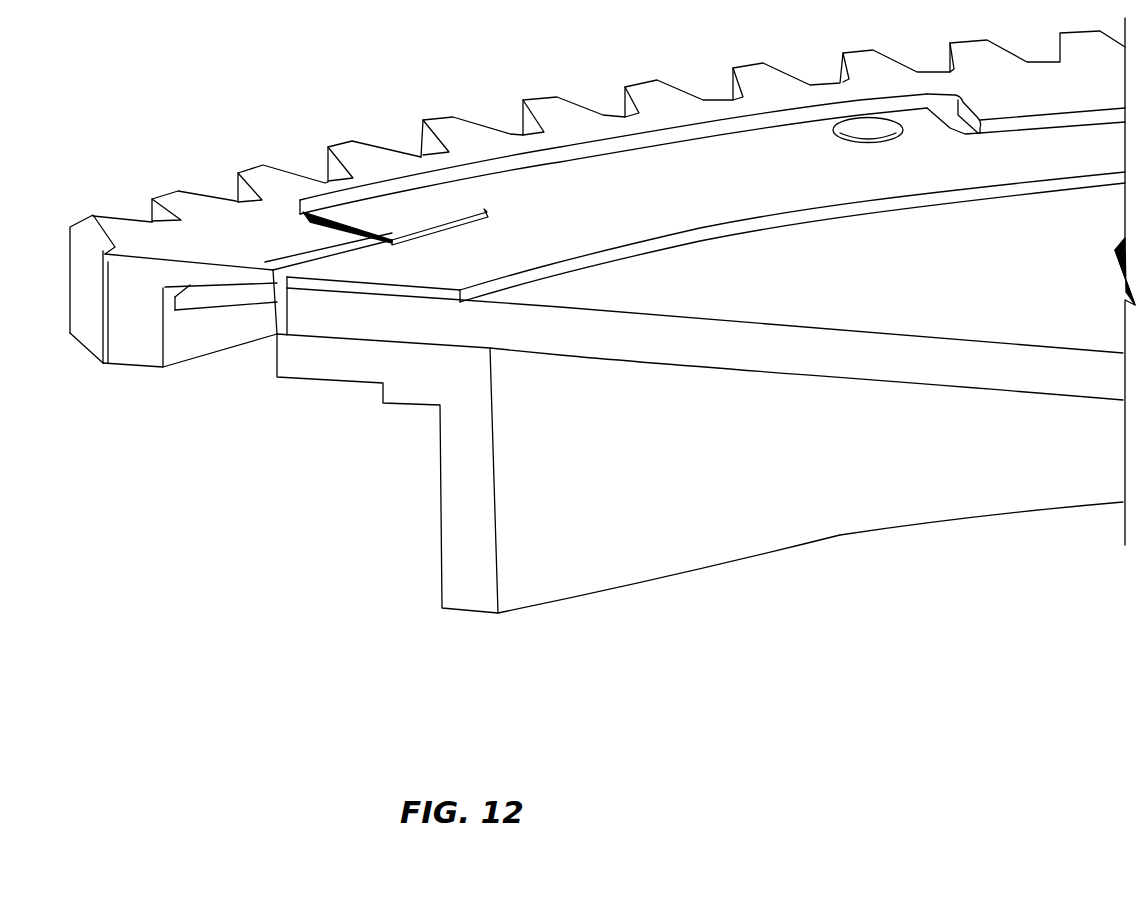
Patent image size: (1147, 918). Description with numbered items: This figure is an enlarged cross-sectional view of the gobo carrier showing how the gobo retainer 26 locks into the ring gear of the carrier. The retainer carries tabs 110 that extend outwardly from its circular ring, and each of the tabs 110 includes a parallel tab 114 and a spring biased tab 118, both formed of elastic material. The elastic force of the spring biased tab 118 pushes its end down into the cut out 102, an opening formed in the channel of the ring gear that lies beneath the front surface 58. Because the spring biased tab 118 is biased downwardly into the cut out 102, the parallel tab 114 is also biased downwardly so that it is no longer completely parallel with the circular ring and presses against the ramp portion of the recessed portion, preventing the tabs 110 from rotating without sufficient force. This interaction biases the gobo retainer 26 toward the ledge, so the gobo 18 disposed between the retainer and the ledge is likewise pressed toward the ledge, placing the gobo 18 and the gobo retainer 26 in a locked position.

The front surface 58 is at (212, 216).
The gobo retainer 26 is at (342, 277).
The spring biased tab 118 is at (207, 307).
The parallel tab 114 is at (417, 213).
The tabs 110 is at (540, 183).
The cut out 102 is at (277, 337).
The gobo 18 is at (373, 316).